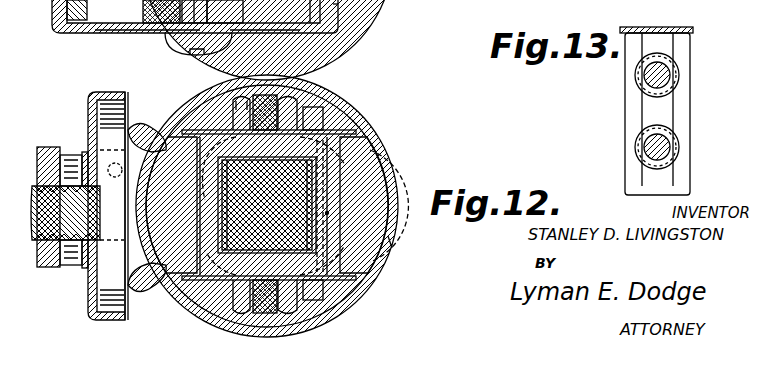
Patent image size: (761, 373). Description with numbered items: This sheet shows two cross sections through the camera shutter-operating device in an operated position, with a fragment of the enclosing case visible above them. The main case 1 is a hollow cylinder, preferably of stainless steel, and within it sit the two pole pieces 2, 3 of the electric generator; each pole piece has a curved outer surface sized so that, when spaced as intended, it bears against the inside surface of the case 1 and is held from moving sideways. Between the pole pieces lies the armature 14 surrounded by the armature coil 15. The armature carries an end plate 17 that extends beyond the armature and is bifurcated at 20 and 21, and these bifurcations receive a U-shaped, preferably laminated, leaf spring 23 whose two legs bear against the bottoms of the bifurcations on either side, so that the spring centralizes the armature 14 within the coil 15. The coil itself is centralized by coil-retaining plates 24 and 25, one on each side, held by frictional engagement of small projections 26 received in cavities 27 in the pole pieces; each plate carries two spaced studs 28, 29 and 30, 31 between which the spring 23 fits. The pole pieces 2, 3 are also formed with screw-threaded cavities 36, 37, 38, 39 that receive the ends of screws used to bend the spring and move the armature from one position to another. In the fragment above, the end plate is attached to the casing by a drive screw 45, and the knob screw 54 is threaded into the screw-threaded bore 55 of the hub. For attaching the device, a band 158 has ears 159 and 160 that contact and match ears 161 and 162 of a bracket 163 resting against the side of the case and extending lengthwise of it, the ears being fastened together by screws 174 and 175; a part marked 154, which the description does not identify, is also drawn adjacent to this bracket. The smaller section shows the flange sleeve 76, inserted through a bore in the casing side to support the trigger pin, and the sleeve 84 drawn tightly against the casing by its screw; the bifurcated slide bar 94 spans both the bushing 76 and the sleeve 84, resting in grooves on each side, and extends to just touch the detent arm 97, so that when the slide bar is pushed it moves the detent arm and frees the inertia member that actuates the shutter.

In FIG. 12, the main case 1 is at (393, 248).
In FIG. 12, the pole piece 2 is at (398, 236).
In FIG. 12, the pole piece 3 is at (203, 308).
In FIG. 12, the armature 14 is at (267, 205).
In FIG. 12, the armature coil 15 is at (425, 168).
In FIG. 12, the end plate 17 is at (358, 98).
In FIG. 12, the bifurcation 20 is at (305, 128).
In FIG. 12, the bifurcation 21 is at (345, 318).
In FIG. 12, the U-shaped leaf spring 23 is at (265, 95).
In FIG. 12, the coil-retaining plate 24 is at (398, 95).
In FIG. 12, the coil-retaining plate 25 is at (374, 283).
In FIG. 12, the projection 26 is at (386, 150).
In FIG. 12, the cavity 27 is at (380, 133).
In FIG. 12, the stud 28 is at (288, 97).
In FIG. 12, the stud 29 is at (239, 97).
In FIG. 12, the stud 30 is at (288, 298).
In FIG. 12, the stud 31 is at (246, 297).
In FIG. 12, the screw-threaded cavity 36 is at (328, 213).
In FIG. 12, the screw-threaded cavity 37 is at (392, 215).
In FIG. 12, the screw-threaded cavity 38 is at (182, 205).
In FIG. 12, the screw-threaded cavity 39 is at (293, 205).
In FIG. 12, the drive screw 45 is at (68, 36).
In FIG. 12, the screw 54 is at (168, 47).
In FIG. 12, the screw-threaded bore 55 is at (336, 3).
In FIG. 13, the flange sleeve 76 is at (670, 155).
In FIG. 13, the sleeve 84 is at (670, 67).
In FIG. 13, the slide bar 94 is at (689, 118).
In FIG. 13, the detent arm 97 is at (684, 27).
In FIG. 12, the bolt head 154 is at (50, 147).
In FIG. 12, the band 158 is at (327, 113).
In FIG. 12, the ear 159 is at (146, 124).
In FIG. 12, the ear 160 is at (141, 290).
In FIG. 12, the ear 161 is at (133, 120).
In FIG. 12, the ear 162 is at (89, 308).
In FIG. 12, the bracket 163 is at (86, 263).
In FIG. 12, the screw 174 is at (160, 130).
In FIG. 12, the screw 175 is at (158, 290).